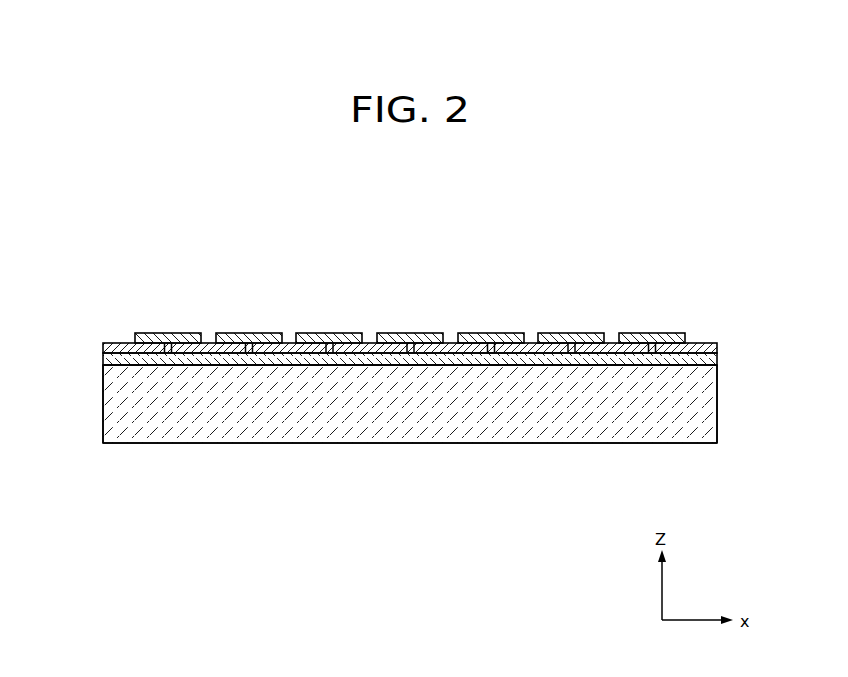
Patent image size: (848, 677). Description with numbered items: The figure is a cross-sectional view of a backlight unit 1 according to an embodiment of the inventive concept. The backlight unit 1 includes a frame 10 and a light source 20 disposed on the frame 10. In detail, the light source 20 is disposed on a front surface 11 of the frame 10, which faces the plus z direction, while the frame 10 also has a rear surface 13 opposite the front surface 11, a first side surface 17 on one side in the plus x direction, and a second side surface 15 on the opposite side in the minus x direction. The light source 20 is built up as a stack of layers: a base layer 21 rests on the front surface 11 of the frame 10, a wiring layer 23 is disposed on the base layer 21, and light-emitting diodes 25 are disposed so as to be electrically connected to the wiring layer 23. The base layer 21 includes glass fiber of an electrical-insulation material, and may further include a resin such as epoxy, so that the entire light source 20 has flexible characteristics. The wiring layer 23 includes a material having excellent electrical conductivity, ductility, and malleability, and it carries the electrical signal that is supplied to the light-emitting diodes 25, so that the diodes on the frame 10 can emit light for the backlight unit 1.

The backlight unit 1 is at (131, 287).
The frame 10 is at (495, 433).
The front surface 11 is at (135, 363).
The rear surface 13 is at (160, 443).
The second side surface 15 is at (103, 399).
The first side surface 17 is at (717, 405).
The light source 20 is at (797, 318).
The base layer 21 is at (712, 360).
The wiring layer 23 is at (713, 350).
The light-emitting diodes 25 is at (682, 338).